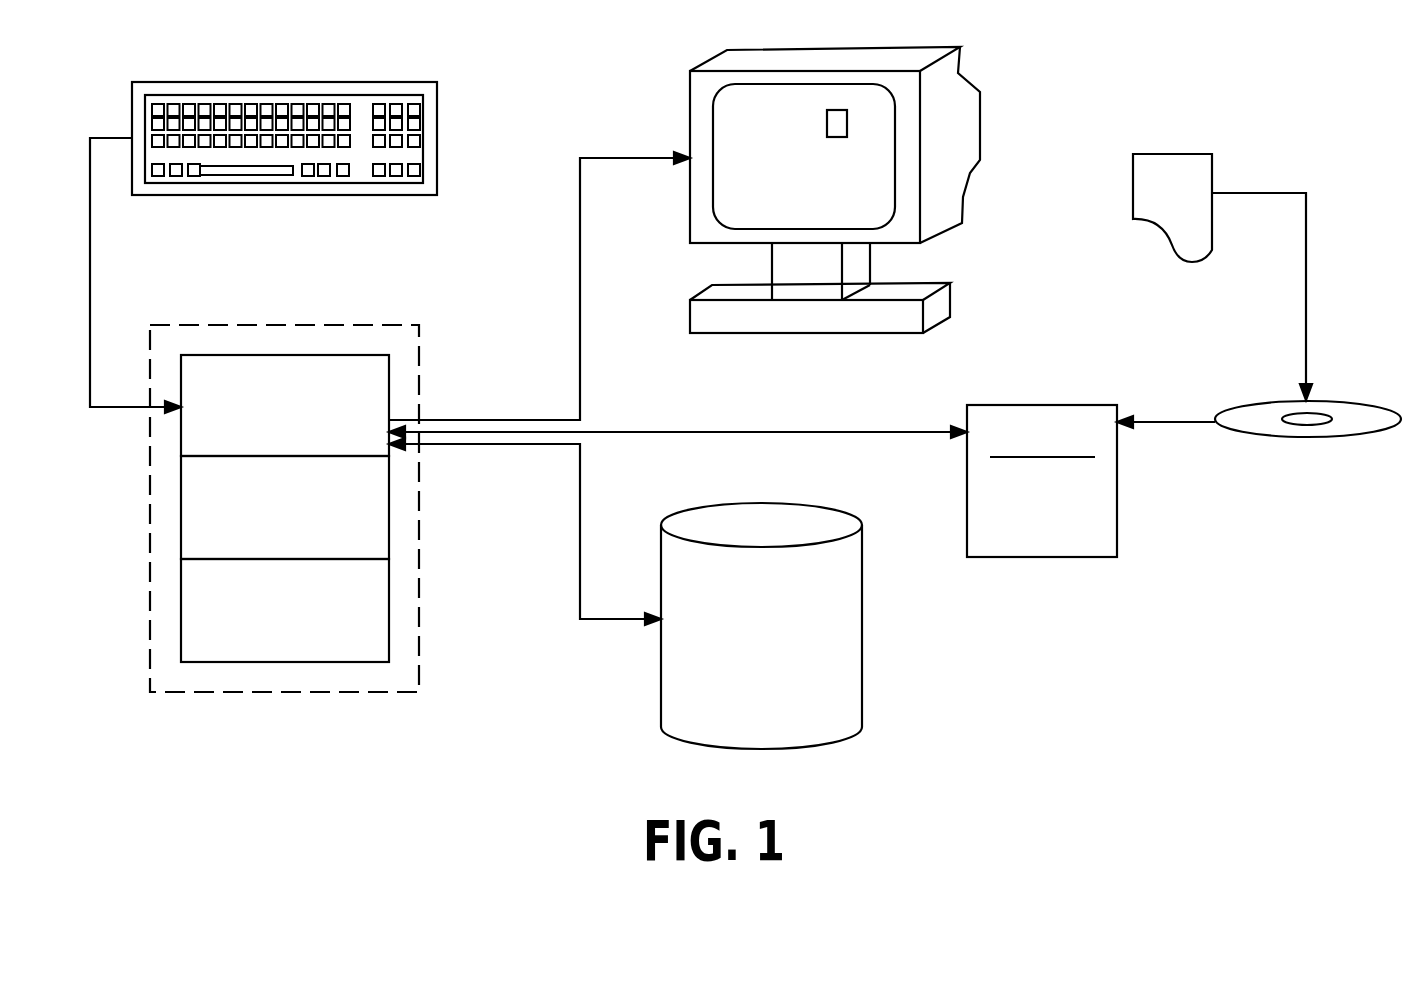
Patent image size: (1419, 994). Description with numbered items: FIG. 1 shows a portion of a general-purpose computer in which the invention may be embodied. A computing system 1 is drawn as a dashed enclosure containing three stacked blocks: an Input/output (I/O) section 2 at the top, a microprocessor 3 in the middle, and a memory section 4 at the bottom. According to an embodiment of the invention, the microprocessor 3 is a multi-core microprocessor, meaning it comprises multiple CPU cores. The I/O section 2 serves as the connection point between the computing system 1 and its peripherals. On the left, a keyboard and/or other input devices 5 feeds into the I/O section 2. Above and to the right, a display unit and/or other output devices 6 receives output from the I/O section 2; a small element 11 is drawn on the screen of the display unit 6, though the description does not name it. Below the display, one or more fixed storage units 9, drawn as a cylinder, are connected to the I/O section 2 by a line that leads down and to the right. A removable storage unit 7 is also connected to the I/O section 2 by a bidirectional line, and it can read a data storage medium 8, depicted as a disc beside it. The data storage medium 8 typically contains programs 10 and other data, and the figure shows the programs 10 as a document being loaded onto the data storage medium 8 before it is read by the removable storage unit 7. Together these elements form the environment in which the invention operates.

The computing system 1 is at (354, 325).
The Input/output (I/O) section 2 is at (215, 367).
The microprocessor 3 is at (391, 523).
The memory section 4 is at (371, 641).
The keyboard and/or other input devices 5 is at (438, 138).
The display unit and/or other output devices 6 is at (687, 123).
The removable storage unit 7 is at (1037, 405).
The data storage medium 8 is at (1262, 405).
The fixed storage unit 9 is at (863, 623).
The programs 10 is at (1133, 183).
The cursor 11 is at (837, 110).